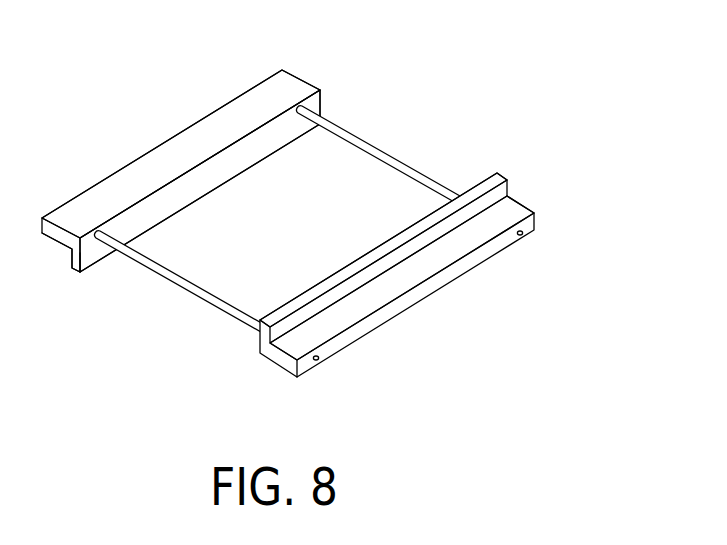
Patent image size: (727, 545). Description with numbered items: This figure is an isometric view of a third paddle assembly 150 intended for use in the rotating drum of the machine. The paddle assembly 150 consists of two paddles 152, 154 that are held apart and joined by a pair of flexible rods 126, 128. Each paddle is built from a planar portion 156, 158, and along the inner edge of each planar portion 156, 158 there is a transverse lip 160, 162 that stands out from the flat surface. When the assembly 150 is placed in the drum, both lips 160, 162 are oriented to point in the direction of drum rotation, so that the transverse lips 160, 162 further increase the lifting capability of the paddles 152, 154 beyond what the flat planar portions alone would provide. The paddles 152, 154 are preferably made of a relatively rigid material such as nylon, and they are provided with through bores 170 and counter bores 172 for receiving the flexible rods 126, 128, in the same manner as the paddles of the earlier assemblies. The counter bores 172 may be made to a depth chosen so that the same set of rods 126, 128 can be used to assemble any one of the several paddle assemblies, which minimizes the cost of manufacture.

The paddle assembly 150 is at (305, 217).
The paddle 152 is at (170, 171).
The paddle 154 is at (400, 294).
The planar portion 156 is at (145, 165).
The planar portion 158 is at (427, 268).
The transverse lip 160 is at (235, 180).
The transverse lip 162 is at (357, 263).
The through bore 170 is at (319, 362).
The counter bore 172 is at (72, 252).
The flexible rod 126 is at (197, 300).
The flexible rod 128 is at (363, 140).